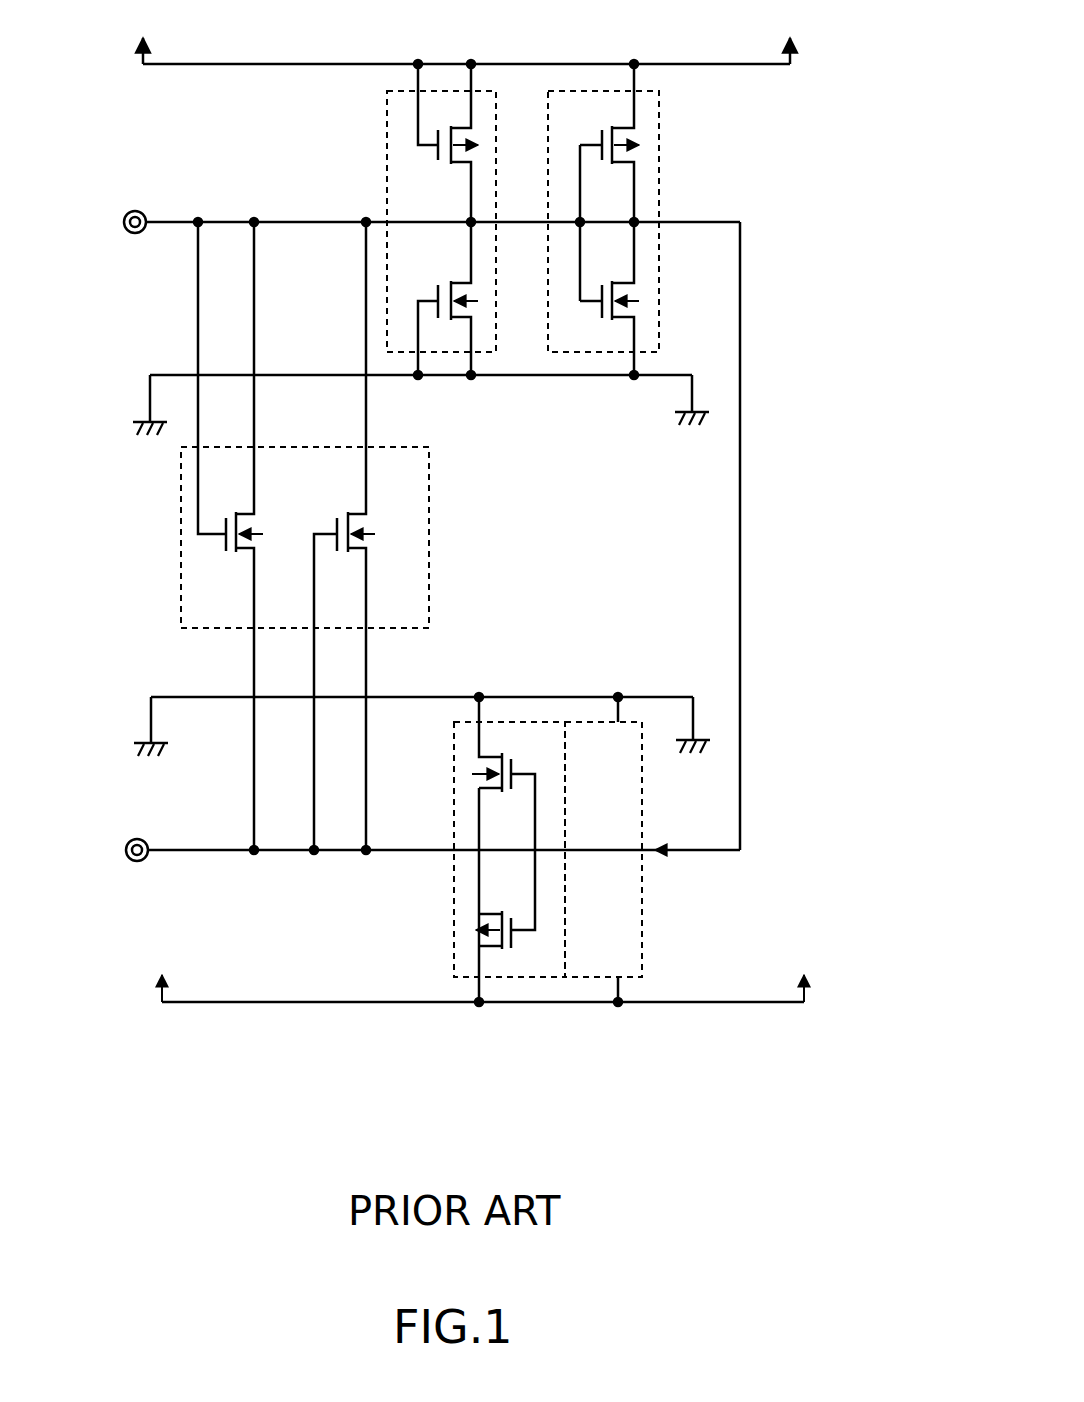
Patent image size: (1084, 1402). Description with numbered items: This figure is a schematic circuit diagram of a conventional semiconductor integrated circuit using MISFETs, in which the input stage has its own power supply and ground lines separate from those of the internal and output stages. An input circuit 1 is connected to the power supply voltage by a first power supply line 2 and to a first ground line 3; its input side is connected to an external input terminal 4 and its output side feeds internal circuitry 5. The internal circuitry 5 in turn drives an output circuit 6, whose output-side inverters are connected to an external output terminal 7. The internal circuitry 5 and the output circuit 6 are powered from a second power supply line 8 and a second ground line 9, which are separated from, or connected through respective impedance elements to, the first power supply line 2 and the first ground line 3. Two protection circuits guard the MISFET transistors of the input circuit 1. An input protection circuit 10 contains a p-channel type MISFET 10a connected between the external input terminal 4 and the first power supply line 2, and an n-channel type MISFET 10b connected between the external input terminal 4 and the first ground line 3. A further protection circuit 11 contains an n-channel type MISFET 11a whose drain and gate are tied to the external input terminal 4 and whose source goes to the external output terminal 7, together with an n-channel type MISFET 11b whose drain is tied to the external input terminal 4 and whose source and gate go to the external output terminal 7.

The input circuit 1 is at (661, 118).
The first power supply line 2 is at (288, 64).
The first ground line 3 is at (525, 376).
The external input terminal 4 is at (141, 214).
The internal circuitry 5 is at (642, 888).
The output circuit 6 is at (454, 885).
The external output terminal 7 is at (141, 838).
The second power supply line 8 is at (378, 1003).
The second ground line 9 is at (645, 697).
The input protection circuit 10 is at (299, 219).
The p-channel type MISFET 10a is at (455, 163).
The n-channel type MISFET 10b is at (442, 298).
The protection circuit 11 is at (419, 536).
The n-channel type MISFET 11a is at (264, 530).
The n-channel type MISFET 11b is at (392, 515).